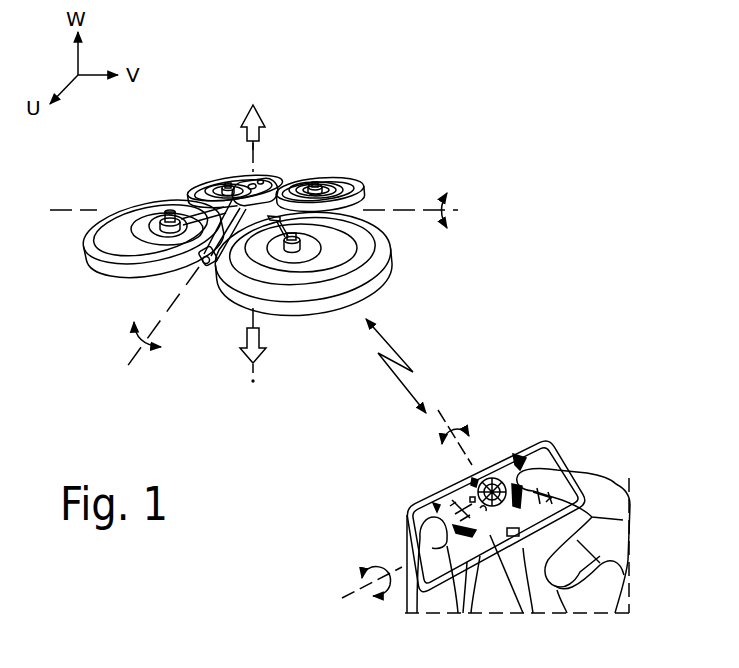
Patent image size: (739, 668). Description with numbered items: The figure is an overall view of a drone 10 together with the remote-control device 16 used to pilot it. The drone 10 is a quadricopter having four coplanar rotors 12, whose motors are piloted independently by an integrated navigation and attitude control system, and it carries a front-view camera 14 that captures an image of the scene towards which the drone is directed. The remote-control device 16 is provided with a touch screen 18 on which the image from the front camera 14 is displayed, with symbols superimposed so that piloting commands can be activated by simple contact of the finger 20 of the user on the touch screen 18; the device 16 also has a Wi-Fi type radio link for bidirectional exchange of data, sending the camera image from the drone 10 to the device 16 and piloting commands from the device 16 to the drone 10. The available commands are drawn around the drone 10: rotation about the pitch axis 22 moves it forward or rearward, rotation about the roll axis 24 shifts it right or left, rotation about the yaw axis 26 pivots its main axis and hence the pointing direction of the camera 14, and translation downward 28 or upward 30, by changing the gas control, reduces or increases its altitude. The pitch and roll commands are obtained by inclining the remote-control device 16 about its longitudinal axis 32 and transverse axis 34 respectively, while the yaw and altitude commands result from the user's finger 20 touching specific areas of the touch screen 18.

The drone 10 is at (393, 112).
The coplanar rotors 12 is at (208, 185).
The front-view camera 14 is at (205, 266).
The remote-control device 16 is at (542, 426).
The touch screen 18 is at (497, 465).
The finger 20 is at (568, 465).
The pitch axis 22 is at (452, 209).
The roll axis 24 is at (137, 353).
The yaw axis 26 is at (254, 99).
The translation downward 28 is at (260, 338).
The translation upward 30 is at (261, 136).
The longitudinal axis 32 is at (353, 594).
The transverse axis 34 is at (470, 466).